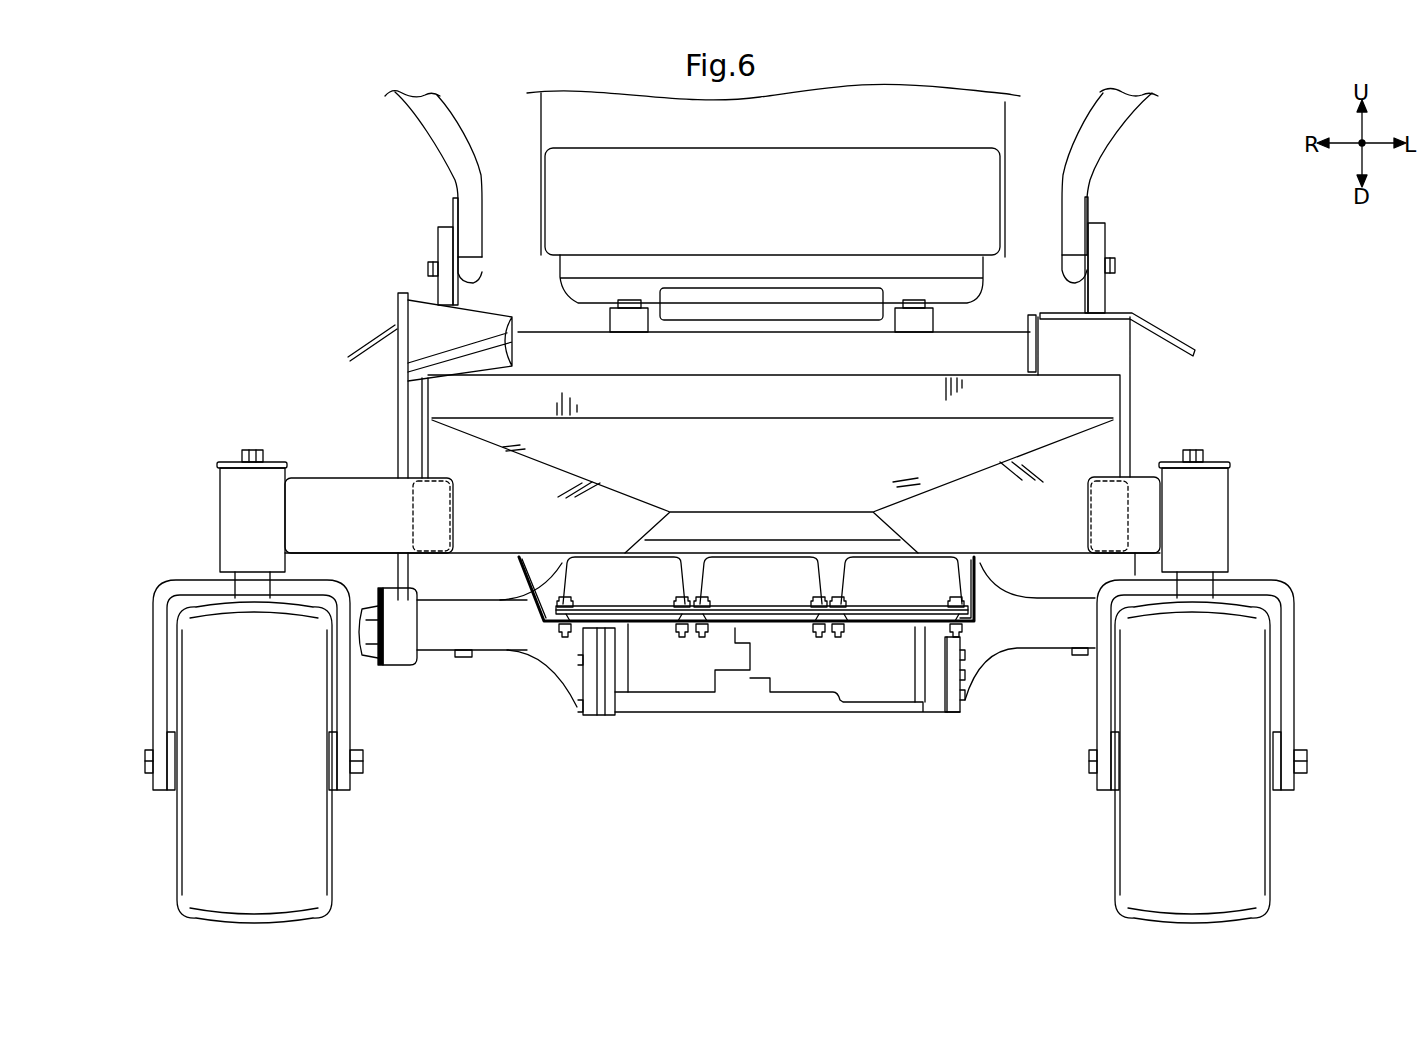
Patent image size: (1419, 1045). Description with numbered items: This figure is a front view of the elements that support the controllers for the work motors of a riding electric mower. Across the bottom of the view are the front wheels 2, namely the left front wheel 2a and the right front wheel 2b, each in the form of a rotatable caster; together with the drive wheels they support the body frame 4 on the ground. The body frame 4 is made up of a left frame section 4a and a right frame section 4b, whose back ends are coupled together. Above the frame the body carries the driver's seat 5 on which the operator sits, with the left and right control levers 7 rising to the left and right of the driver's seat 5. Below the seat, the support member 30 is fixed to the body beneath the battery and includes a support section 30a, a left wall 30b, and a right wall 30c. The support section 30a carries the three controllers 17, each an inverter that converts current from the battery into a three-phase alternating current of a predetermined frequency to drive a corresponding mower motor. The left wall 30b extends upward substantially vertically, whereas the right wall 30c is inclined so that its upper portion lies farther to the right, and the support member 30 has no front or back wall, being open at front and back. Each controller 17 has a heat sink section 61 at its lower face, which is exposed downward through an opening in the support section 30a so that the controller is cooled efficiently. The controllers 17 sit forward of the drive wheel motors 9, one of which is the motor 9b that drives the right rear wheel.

The front wheels 2 is at (722, 751).
The left front wheel 2a is at (1235, 690).
The right front wheel 2b is at (203, 692).
The body frame 4 is at (733, 464).
The left frame section 4a is at (1148, 487).
The right frame section 4b is at (348, 490).
The driver's seat 5 is at (998, 125).
The control levers 7 is at (437, 133).
The drive wheel motors 9 is at (756, 668).
The motor 9b is at (545, 668).
The controllers 17 is at (872, 567).
The support member 30 is at (984, 623).
The support section 30a is at (812, 612).
The left wall 30b is at (982, 602).
The right wall 30c is at (536, 578).
The heat sink section 61 is at (646, 614).